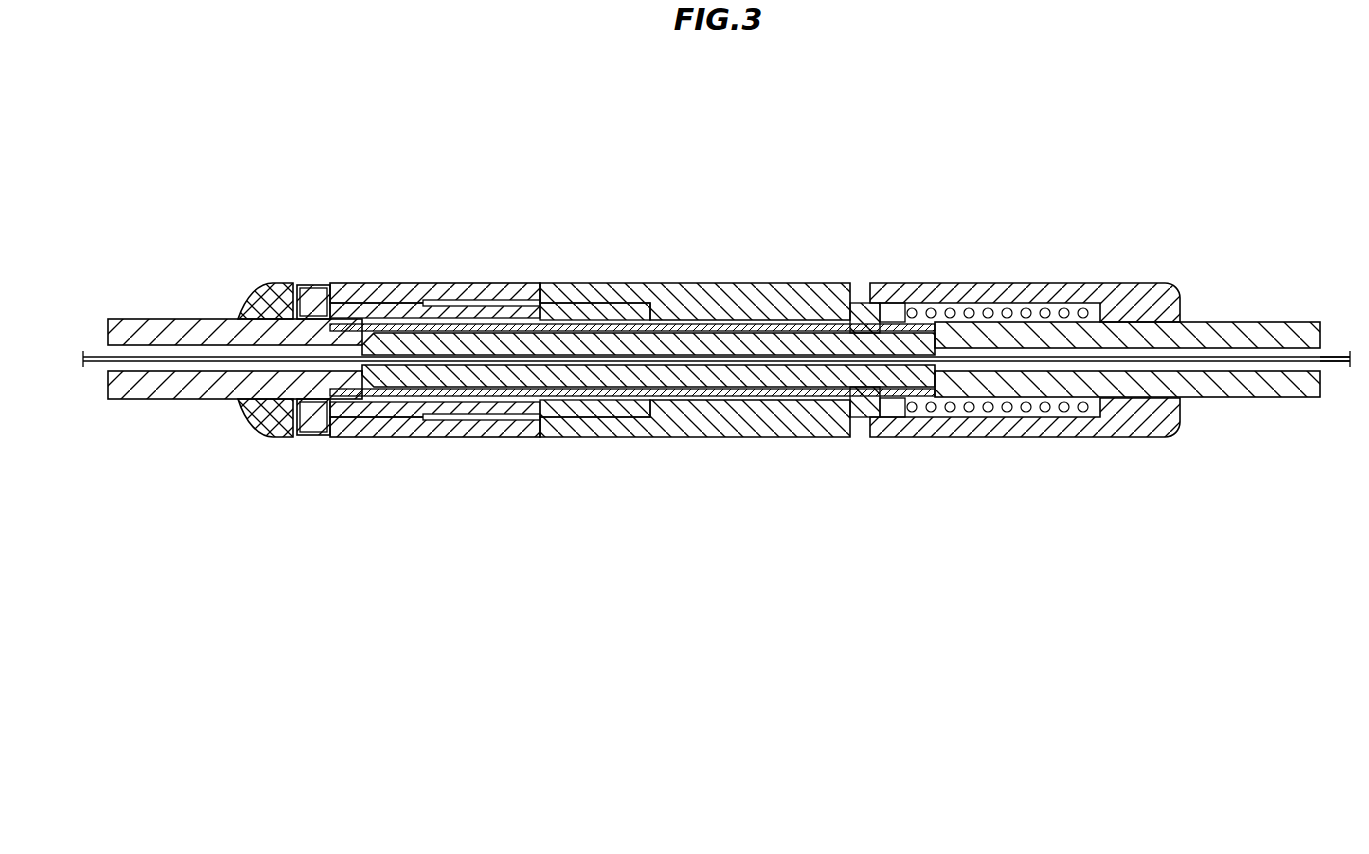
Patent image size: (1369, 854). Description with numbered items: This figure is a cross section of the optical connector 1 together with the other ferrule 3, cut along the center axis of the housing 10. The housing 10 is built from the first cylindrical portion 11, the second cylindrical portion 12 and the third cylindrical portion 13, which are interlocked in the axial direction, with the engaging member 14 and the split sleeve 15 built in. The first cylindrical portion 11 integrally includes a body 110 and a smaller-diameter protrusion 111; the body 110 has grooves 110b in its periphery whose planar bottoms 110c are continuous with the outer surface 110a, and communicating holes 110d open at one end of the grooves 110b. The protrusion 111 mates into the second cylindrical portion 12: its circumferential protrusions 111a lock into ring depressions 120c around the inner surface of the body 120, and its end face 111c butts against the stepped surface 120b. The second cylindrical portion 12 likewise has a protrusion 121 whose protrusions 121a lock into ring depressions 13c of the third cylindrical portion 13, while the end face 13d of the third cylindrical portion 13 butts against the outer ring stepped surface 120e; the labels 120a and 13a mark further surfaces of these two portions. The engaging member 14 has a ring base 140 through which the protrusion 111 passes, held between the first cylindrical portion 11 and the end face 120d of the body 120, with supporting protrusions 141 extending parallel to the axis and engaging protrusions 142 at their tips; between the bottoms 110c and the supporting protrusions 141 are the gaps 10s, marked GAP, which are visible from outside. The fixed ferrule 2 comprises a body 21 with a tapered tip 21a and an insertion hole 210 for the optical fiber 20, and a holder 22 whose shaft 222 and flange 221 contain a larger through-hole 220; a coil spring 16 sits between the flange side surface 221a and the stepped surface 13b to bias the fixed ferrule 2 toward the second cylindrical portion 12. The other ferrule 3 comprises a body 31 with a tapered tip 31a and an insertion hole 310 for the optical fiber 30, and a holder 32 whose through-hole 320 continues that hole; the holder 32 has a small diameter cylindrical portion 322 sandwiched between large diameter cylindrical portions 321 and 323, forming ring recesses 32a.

The optical connector 1 is at (1206, 193).
The fixed ferrule 2 is at (1249, 279).
The other ferrule 3 is at (148, 263).
The housing 10 is at (1104, 244).
The first cylindrical portion 11 is at (262, 206).
The second cylindrical portion 12 is at (727, 207).
The third cylindrical portion 13 is at (1059, 212).
The engaging member 14 is at (486, 213).
The split sleeve 15 is at (776, 420).
The coil spring 16 is at (1017, 412).
The optical fiber 20 is at (1332, 357).
The body 21 is at (868, 322).
The holder 22 is at (1262, 322).
The optical fiber 30 is at (95, 356).
The body 31 is at (512, 390).
The holder 32 is at (192, 318).
The body 110 is at (262, 290).
The outer surface 110a is at (296, 300).
The grooves 110b is at (491, 297).
The bottoms 110c is at (414, 298).
The communicating holes 110d is at (334, 300).
The protrusion 111 is at (606, 315).
The protrusions 111a is at (580, 308).
The end face 111c is at (671, 320).
The body 120 is at (712, 300).
The end surface 120a is at (558, 303).
The stepped surface 120b is at (606, 415).
The ring depressions 120c is at (560, 415).
The end face 120d is at (533, 432).
The ring stepped surface 120e is at (762, 300).
The protrusion 121 is at (780, 300).
The protrusions 121a is at (816, 300).
The housing body 13a is at (996, 295).
The stepped surface 13b is at (1080, 425).
The ring depressions 13c is at (781, 420).
The end face 13d is at (736, 435).
The ring base 140 is at (530, 304).
The supporting protrusions 141 is at (407, 300).
The engaging protrusions 142 is at (308, 288).
The gaps 10s is at (381, 298).
The gap GAP is at (473, 430).
The tip 21a is at (656, 326).
The insertion hole 210 is at (876, 400).
The through-hole 220 is at (1196, 367).
The flange 221 is at (893, 300).
The side surface 221a is at (906, 314).
The shaft 222 is at (1198, 330).
The tip 31a is at (690, 386).
The insertion hole 310 is at (533, 418).
The through-hole 320 is at (150, 370).
The large diameter cylindrical portion 321 is at (383, 298).
The small diameter cylindrical portion 322 is at (290, 396).
The large diameter cylindrical portion 323 is at (205, 380).
The ring recesses 32a is at (258, 382).